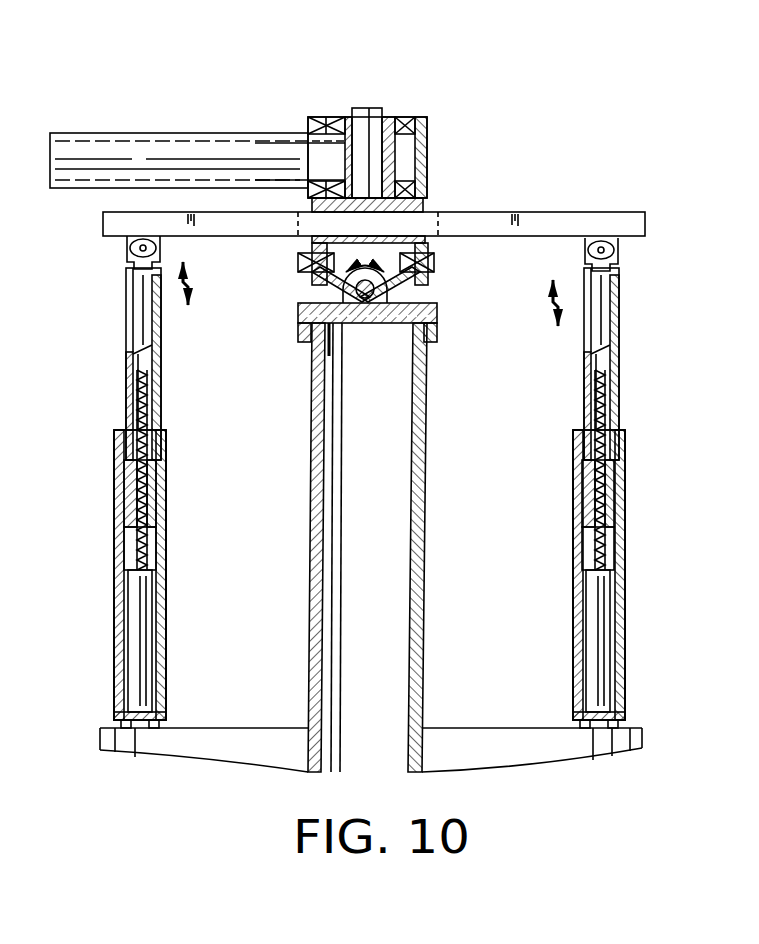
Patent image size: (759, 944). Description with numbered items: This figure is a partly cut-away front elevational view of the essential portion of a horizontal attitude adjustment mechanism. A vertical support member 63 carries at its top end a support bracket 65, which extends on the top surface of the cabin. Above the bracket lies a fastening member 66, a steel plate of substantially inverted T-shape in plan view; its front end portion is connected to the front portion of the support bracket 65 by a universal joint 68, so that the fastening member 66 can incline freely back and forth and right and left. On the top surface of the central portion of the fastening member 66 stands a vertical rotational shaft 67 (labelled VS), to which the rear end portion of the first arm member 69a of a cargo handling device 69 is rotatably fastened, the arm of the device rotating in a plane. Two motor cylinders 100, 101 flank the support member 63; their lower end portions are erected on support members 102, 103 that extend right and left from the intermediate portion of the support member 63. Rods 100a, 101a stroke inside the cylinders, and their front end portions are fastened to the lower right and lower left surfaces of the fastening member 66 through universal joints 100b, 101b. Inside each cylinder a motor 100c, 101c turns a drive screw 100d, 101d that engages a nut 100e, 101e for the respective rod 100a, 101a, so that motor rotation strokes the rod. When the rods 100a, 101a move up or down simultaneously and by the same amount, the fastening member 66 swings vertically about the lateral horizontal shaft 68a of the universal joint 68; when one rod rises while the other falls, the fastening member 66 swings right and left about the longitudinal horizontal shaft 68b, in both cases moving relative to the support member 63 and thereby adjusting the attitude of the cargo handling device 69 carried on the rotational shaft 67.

The cargo handling device 69 is at (119, 131).
The first arm member 69a is at (170, 132).
The rotational shaft 67 is at (340, 162).
The vertical shaft VS is at (366, 122).
The fastening member 66 is at (530, 212).
The universal joint 68 is at (306, 292).
The lateral horizontal shaft 68a is at (436, 262).
The longitudinal horizontal shaft 68b is at (316, 360).
The support bracket 65 is at (437, 304).
The support member 63 is at (427, 540).
The support member 102 is at (236, 735).
The support member 103 is at (505, 735).
The motor cylinder 100 is at (112, 605).
The rod 100a is at (133, 318).
The universal joint 100b is at (128, 256).
The motor 100c is at (130, 660).
The drive screw 100d is at (147, 540).
The nut 100e is at (150, 478).
The motor cylinder 101 is at (627, 617).
The rod 101a is at (610, 318).
The universal joint 101b is at (620, 258).
The motor 101c is at (600, 665).
The drive screw 101d is at (600, 545).
The nut 101e is at (605, 485).